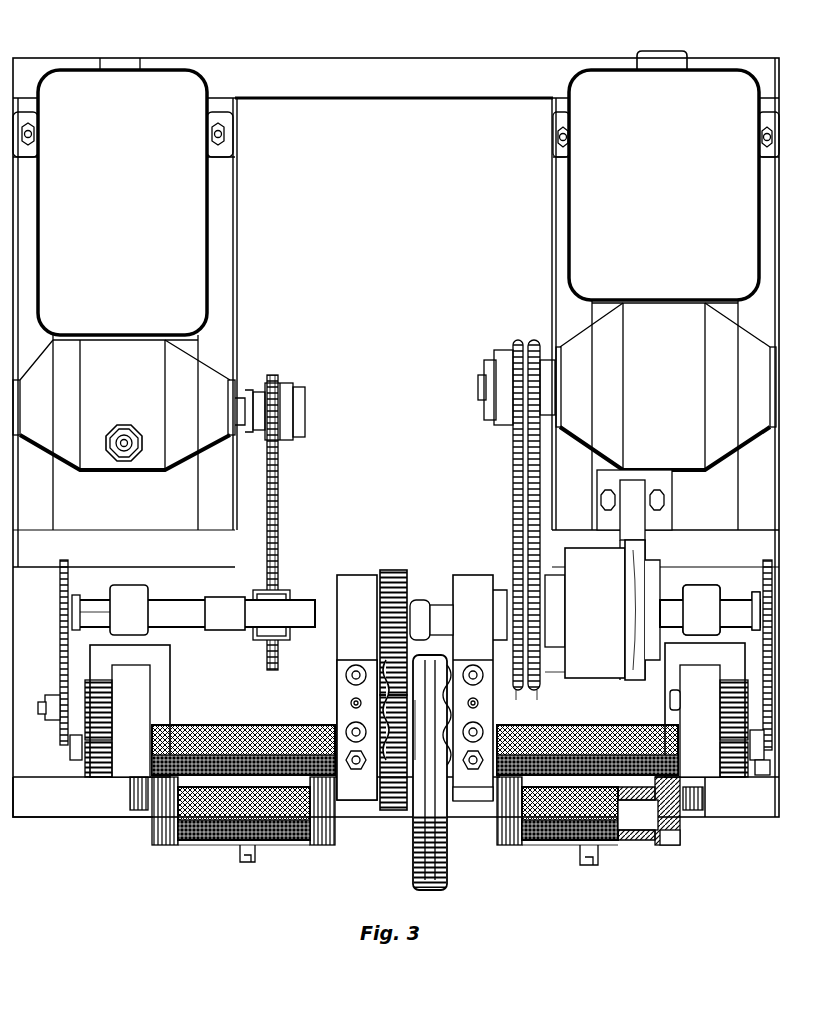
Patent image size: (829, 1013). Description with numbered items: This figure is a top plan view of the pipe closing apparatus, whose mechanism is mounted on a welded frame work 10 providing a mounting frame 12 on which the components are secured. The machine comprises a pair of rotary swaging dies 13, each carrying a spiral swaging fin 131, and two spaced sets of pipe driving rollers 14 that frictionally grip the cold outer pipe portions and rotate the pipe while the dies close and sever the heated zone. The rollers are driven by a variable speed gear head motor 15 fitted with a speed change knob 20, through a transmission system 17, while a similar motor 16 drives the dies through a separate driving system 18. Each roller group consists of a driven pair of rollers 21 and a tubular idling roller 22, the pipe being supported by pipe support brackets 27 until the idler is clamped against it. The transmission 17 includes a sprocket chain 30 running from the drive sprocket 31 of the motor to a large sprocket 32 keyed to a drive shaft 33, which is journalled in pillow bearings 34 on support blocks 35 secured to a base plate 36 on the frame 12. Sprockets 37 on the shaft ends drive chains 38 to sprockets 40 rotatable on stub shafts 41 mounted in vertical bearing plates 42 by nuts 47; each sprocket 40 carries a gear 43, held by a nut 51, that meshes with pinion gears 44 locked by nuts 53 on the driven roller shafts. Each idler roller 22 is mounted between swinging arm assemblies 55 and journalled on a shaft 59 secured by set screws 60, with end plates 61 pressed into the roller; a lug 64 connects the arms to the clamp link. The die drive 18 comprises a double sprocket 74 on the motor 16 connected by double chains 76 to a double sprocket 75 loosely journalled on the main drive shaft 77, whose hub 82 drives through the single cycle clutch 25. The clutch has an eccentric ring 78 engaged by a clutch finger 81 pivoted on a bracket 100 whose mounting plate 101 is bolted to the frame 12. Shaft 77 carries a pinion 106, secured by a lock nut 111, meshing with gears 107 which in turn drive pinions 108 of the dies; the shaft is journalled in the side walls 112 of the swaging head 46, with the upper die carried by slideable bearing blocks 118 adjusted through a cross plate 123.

The frame work 10 is at (356, 56).
The mounting frame 12 is at (493, 74).
The rotary swaging dies 13 is at (410, 857).
The pipe driving rollers 14 is at (268, 784).
The variable speed gear head motor 15 is at (197, 240).
The gear head motor 16 is at (592, 220).
The transmission system 17 is at (177, 596).
The driving system 18 is at (508, 473).
The speed change knob 20 is at (130, 458).
The driven rollers 21 is at (228, 722).
The idling roller 22 is at (210, 842).
The single cycle clutch 25 is at (580, 545).
The pipe support brackets 27 is at (130, 795).
The sprocket chain 30 is at (278, 474).
The drive sprocket 31 is at (290, 404).
The large sprocket 32 is at (285, 642).
The drive shaft 33 is at (97, 607).
The pillow bearings 34 is at (134, 590).
The support blocks 35 is at (160, 658).
The base plate 36 is at (47, 780).
The sprockets 37 is at (76, 595).
The sprocket chain 38 is at (62, 654).
The sprocket 40 is at (62, 752).
The stub shaft 41 is at (45, 710).
The vertical bearing plate 42 is at (140, 686).
The gear 43 is at (100, 706).
The pinion gears 44 is at (102, 750).
The swaging head 46 is at (336, 578).
The nut 47 is at (672, 697).
The nut 51 is at (56, 702).
The nuts 53 is at (760, 772).
The swinging arm assemblies 55 is at (160, 838).
The shaft 59 is at (625, 812).
The set screws 60 is at (665, 846).
The end plates 61 is at (648, 842).
The lug 64 is at (255, 853).
The double sprocket 74 is at (498, 358).
The double sprocket 75 is at (548, 679).
The double sprocket chains 76 is at (512, 508).
The main drive shaft 77 is at (443, 604).
The eccentric clutch ring 78 is at (632, 592).
The clutch finger 81 is at (634, 537).
The hub 82 is at (568, 611).
The bracket 100 is at (648, 482).
The mounting plate 101 is at (668, 486).
The pinion 106 is at (393, 570).
The gears 107 is at (385, 672).
The pinions 108 is at (392, 812).
The lock nut 111 is at (418, 600).
The side walls 112 is at (355, 585).
The bearing block 118 is at (475, 805).
The cross plate 123 is at (342, 698).
The swaging fin 131 is at (432, 722).